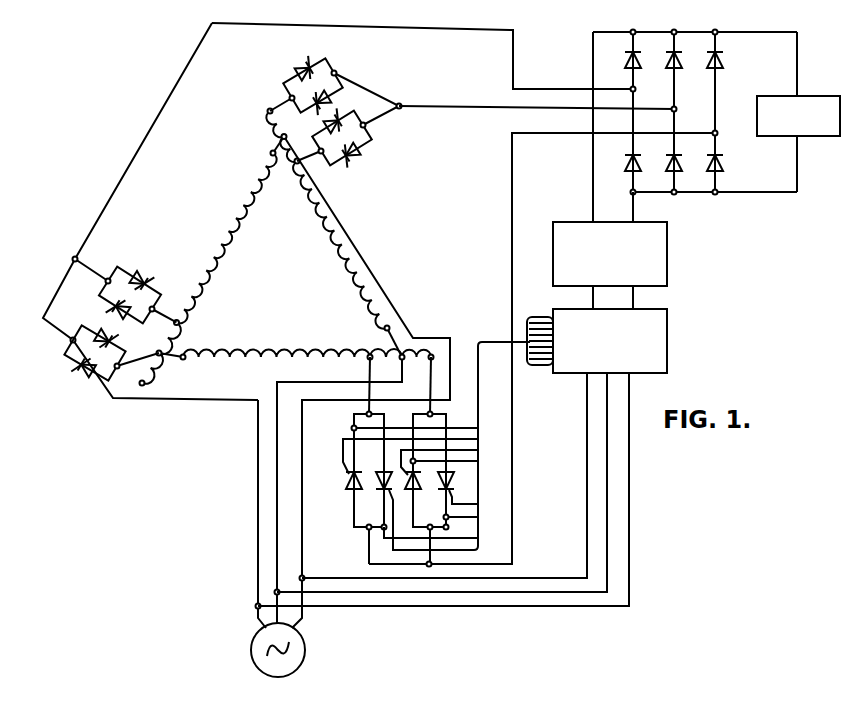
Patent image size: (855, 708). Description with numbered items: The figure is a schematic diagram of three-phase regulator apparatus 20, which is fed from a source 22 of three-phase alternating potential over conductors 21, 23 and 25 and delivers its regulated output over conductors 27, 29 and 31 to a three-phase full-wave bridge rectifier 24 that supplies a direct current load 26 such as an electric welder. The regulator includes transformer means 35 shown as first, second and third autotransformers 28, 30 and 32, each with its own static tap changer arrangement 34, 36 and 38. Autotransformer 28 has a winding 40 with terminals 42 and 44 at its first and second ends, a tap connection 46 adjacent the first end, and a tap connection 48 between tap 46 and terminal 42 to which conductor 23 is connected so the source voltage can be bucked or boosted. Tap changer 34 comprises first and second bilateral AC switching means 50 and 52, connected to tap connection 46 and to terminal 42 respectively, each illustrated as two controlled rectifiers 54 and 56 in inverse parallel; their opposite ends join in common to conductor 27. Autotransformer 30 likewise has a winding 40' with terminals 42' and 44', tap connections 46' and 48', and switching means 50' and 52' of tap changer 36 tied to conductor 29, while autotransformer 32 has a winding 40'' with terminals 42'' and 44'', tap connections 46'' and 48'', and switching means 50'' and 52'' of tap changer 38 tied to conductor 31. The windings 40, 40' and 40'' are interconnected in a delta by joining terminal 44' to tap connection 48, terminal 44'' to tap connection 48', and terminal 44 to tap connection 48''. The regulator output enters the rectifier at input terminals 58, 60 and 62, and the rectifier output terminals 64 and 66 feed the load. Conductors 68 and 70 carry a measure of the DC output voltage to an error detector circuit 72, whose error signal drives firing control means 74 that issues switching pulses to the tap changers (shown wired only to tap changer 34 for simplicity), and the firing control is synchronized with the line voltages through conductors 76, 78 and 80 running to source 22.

The three-phase regulator apparatus 20 is at (192, 436).
The conductor 21 is at (306, 558).
The source of three-phase alternating potential 22 is at (254, 640).
The conductor 23 is at (280, 561).
The three-phase full-wave bridge rectifier 24 is at (695, 110).
The conductor 25 is at (256, 553).
The direct current load 26 is at (784, 94).
The conductor 27 is at (529, 130).
The first autotransformer 28 is at (307, 339).
The conductor 29 is at (540, 108).
The second autotransformer 30 is at (326, 220).
The conductor 31 is at (543, 87).
The third autotransformer 32 is at (209, 268).
The static tap changer arrangement 34 is at (420, 446).
The transformer means 35 is at (290, 267).
The static tap changer arrangement 36 is at (323, 112).
The static tap changer arrangement 38 is at (100, 318).
The winding 40 is at (276, 342).
The winding 40' is at (337, 245).
The winding 40'' is at (227, 238).
The terminal 42 is at (418, 378).
The terminal 42' is at (245, 108).
The terminal 42'' is at (167, 387).
The terminal 44 is at (202, 368).
The terminal 44' is at (364, 318).
The terminal 44'' is at (249, 157).
The tap connection 46 is at (350, 369).
The tap connection 46' is at (284, 183).
The tap connection 46'' is at (200, 321).
The tap connection 48 is at (390, 369).
The tap connection 48' is at (252, 134).
The tap connection 48'' is at (155, 339).
The first bilateral AC switching means 50 is at (420, 446).
The bilateral AC switching means 50' is at (354, 137).
The first bilateral AC switching means 50'' is at (128, 290).
The second bilateral AC switching means 52 is at (439, 471).
The bilateral AC switching means 52' is at (295, 85).
The second bilateral AC switching means 52'' is at (77, 353).
The controlled rectifier 54 is at (347, 476).
The controlled rectifier 56 is at (375, 481).
The input terminal 58 is at (717, 133).
The input terminal 60 is at (676, 111).
The input terminal 62 is at (635, 89).
The output terminal 64 is at (717, 33).
The output terminal 66 is at (717, 193).
The conductor 68 is at (591, 43).
The conductor 70 is at (636, 208).
The error detector circuit 72 is at (667, 236).
The firing control means 74 is at (667, 327).
The conductor 76 is at (630, 554).
The conductor 78 is at (606, 554).
The conductor 80 is at (584, 547).